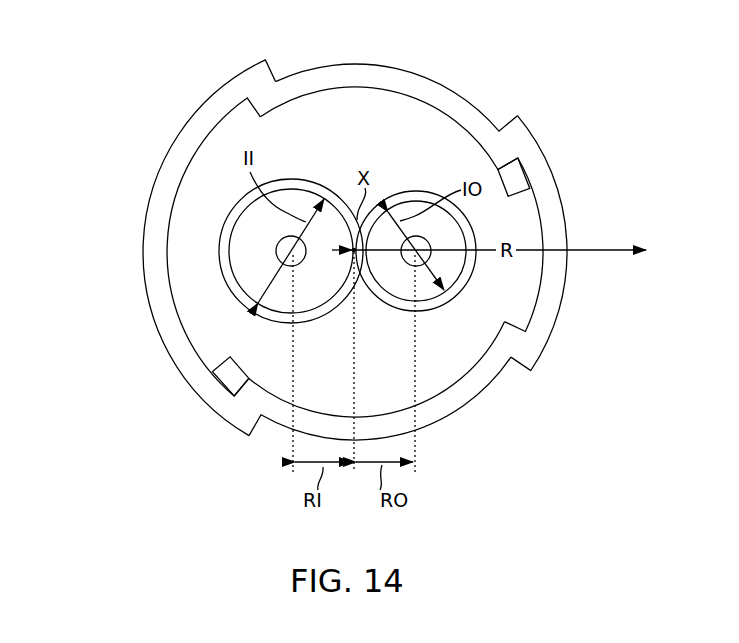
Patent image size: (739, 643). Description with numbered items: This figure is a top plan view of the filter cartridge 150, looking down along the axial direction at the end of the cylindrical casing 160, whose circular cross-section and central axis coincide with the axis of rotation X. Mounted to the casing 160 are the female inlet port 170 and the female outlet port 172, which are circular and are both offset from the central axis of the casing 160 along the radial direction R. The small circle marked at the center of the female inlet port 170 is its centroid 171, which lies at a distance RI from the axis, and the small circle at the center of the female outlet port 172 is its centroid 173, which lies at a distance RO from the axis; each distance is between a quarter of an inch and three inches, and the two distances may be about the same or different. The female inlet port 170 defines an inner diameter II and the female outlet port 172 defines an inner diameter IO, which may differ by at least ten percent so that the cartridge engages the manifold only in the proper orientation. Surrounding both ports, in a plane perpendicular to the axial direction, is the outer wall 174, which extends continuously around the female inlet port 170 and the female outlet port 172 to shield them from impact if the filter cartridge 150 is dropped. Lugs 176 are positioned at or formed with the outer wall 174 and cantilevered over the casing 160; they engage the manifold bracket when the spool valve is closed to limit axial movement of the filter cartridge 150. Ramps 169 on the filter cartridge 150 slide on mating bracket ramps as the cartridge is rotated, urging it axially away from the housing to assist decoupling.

The filter cartridge 150 is at (118, 78).
The casing 160 is at (208, 184).
The ramps 169 is at (513, 177).
The female inlet port 170 is at (408, 195).
The inner core center 171 is at (433, 258).
The female outlet port 172 is at (310, 184).
The outer core center 173 is at (306, 267).
The outer wall 174 is at (400, 80).
The lugs 176 is at (158, 319).